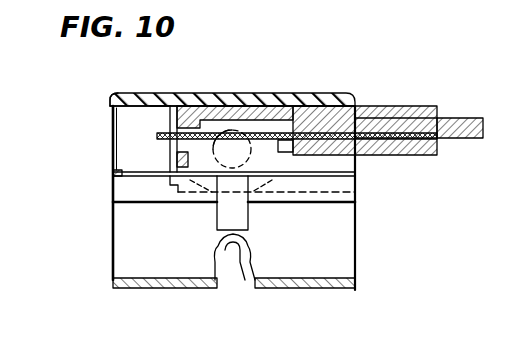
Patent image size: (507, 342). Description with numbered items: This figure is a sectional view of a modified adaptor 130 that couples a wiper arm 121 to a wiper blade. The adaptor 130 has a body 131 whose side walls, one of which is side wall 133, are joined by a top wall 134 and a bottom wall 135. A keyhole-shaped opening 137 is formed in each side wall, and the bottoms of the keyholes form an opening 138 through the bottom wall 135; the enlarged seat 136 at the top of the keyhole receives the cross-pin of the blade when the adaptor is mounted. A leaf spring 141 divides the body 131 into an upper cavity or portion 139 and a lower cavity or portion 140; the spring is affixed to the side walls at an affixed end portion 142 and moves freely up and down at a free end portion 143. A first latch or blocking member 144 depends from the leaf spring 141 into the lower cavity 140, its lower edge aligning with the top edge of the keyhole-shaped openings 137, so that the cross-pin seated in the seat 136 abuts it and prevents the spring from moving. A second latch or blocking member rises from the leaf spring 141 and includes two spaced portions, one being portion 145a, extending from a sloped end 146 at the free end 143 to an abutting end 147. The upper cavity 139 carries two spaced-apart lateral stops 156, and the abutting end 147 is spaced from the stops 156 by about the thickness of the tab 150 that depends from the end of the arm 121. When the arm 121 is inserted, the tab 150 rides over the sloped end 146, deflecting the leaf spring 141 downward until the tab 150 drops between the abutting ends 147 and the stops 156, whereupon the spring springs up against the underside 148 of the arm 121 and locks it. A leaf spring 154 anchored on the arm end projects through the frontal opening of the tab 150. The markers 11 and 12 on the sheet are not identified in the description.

The flow direction 11 is at (102, 214).
The flow direction 12 is at (375, 196).
The wiper arm 121 is at (452, 104).
The adaptor 130 is at (272, 93).
The body 131 is at (110, 203).
The side wall 133 is at (123, 265).
The top wall 134 is at (318, 93).
The bottom wall 135 is at (175, 288).
The enlarged seat 136 is at (225, 250).
The keyhole-shaped opening 137 is at (245, 280).
The opening 138 is at (217, 290).
The upper cavity or portion 139 is at (120, 120).
The lower cavity or portion 140 is at (118, 248).
The leaf spring 141 is at (318, 176).
The affixed end portion 142 is at (113, 170).
The free end portion 143 is at (357, 183).
The first latch or blocking member 144 is at (217, 213).
The spaced portion of second latch or blocking member 145a is at (293, 174).
The sloped end 146 is at (345, 152).
The abutting end 147 is at (183, 150).
The underside 148 is at (447, 139).
The tab 150 is at (172, 160).
The leaf spring 154 is at (225, 110).
The lateral stops 156 is at (153, 110).